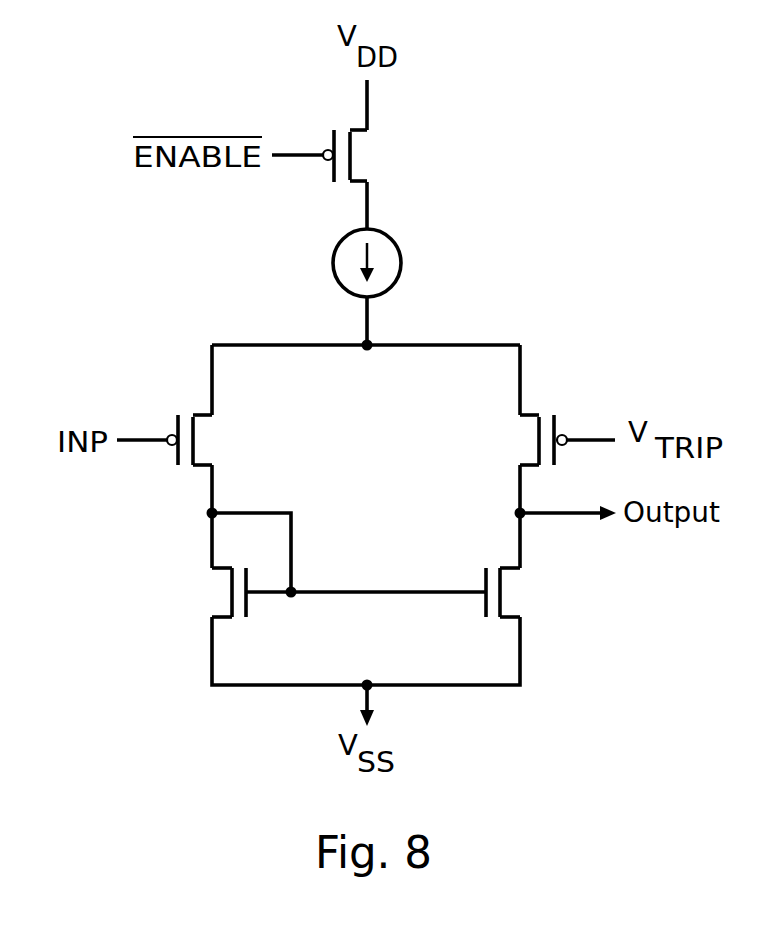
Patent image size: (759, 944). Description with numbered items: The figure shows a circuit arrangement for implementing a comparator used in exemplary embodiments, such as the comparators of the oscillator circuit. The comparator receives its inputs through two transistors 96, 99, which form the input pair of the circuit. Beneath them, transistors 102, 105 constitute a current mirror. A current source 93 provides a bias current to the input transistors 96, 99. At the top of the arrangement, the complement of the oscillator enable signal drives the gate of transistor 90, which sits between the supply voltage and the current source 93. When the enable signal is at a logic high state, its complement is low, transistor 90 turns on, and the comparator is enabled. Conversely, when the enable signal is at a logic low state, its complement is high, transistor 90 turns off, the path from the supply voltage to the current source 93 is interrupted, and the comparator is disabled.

The transistor 90 is at (355, 133).
The current source 93 is at (402, 263).
The transistor 96 is at (203, 417).
The transistor 99 is at (532, 418).
The transistor 102 is at (222, 618).
The transistor 105 is at (510, 618).